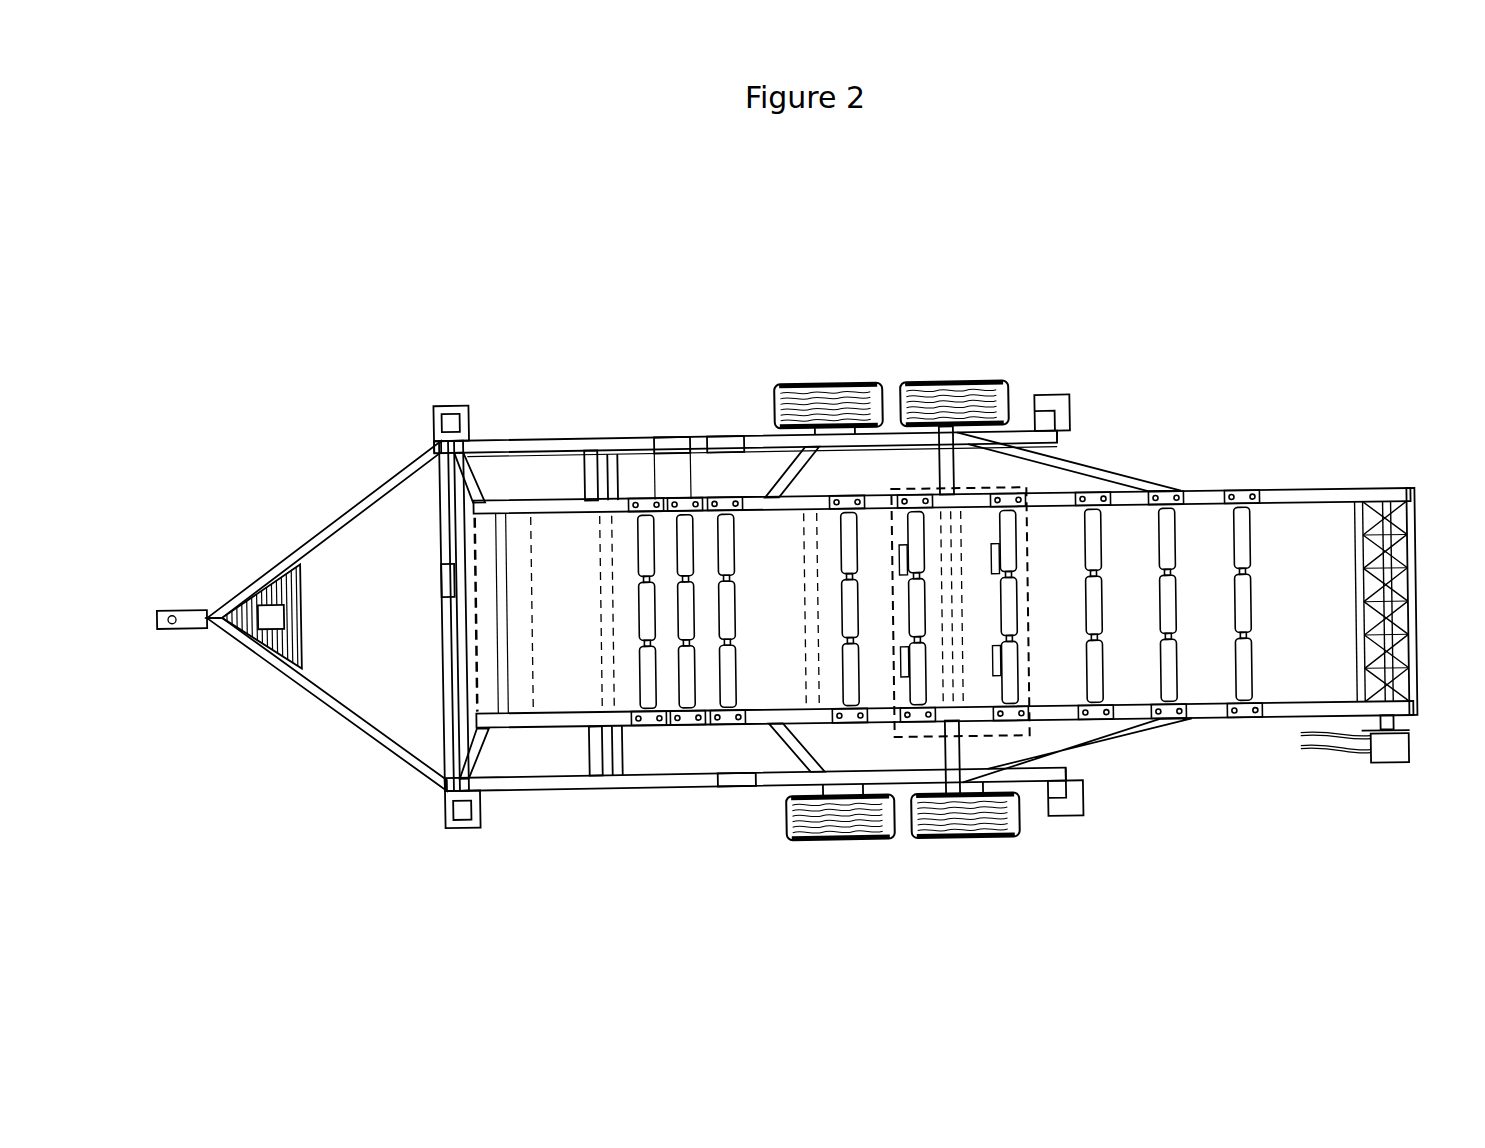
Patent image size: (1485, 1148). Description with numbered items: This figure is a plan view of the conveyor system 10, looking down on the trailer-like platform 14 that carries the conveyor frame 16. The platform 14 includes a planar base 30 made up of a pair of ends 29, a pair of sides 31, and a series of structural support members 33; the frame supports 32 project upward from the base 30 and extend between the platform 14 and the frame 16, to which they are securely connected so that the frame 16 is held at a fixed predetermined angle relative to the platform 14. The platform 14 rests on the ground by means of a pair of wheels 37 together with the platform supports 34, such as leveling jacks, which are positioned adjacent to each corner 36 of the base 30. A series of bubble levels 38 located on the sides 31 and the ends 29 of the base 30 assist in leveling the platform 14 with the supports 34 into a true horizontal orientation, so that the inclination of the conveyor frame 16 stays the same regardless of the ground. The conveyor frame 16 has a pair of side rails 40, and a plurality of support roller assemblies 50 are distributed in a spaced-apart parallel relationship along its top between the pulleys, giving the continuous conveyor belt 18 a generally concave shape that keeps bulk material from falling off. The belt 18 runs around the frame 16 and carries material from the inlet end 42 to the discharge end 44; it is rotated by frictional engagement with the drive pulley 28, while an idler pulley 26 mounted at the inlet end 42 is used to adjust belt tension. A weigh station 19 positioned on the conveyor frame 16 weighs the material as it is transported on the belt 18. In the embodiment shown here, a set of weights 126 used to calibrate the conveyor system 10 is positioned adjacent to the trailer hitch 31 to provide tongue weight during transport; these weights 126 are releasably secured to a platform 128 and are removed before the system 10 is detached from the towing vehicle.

The conveyor system 10 is at (813, 585).
The platform 14 is at (414, 715).
The conveyor frame 16 is at (927, 599).
The conveyor belt 18 is at (1124, 697).
The weigh station 19 is at (914, 491).
The idler pulley 26 is at (472, 648).
The drive pulley 28 is at (1413, 722).
The ends 29 is at (441, 500).
The planar base 30 is at (680, 807).
The sides 31 is at (675, 441).
The frame supports 32 is at (797, 481).
The structural support members 33 is at (936, 757).
The platform supports 34 is at (459, 405).
The corner 36 is at (440, 438).
The wheels 37 is at (963, 849).
The bubble levels 38 is at (723, 442).
The side rails 40 is at (1207, 500).
The inlet end 42 is at (471, 556).
The discharge end 44 is at (1432, 710).
The support roller assemblies 50 is at (841, 621).
The weights 126 is at (258, 617).
The platform 128 is at (271, 580).